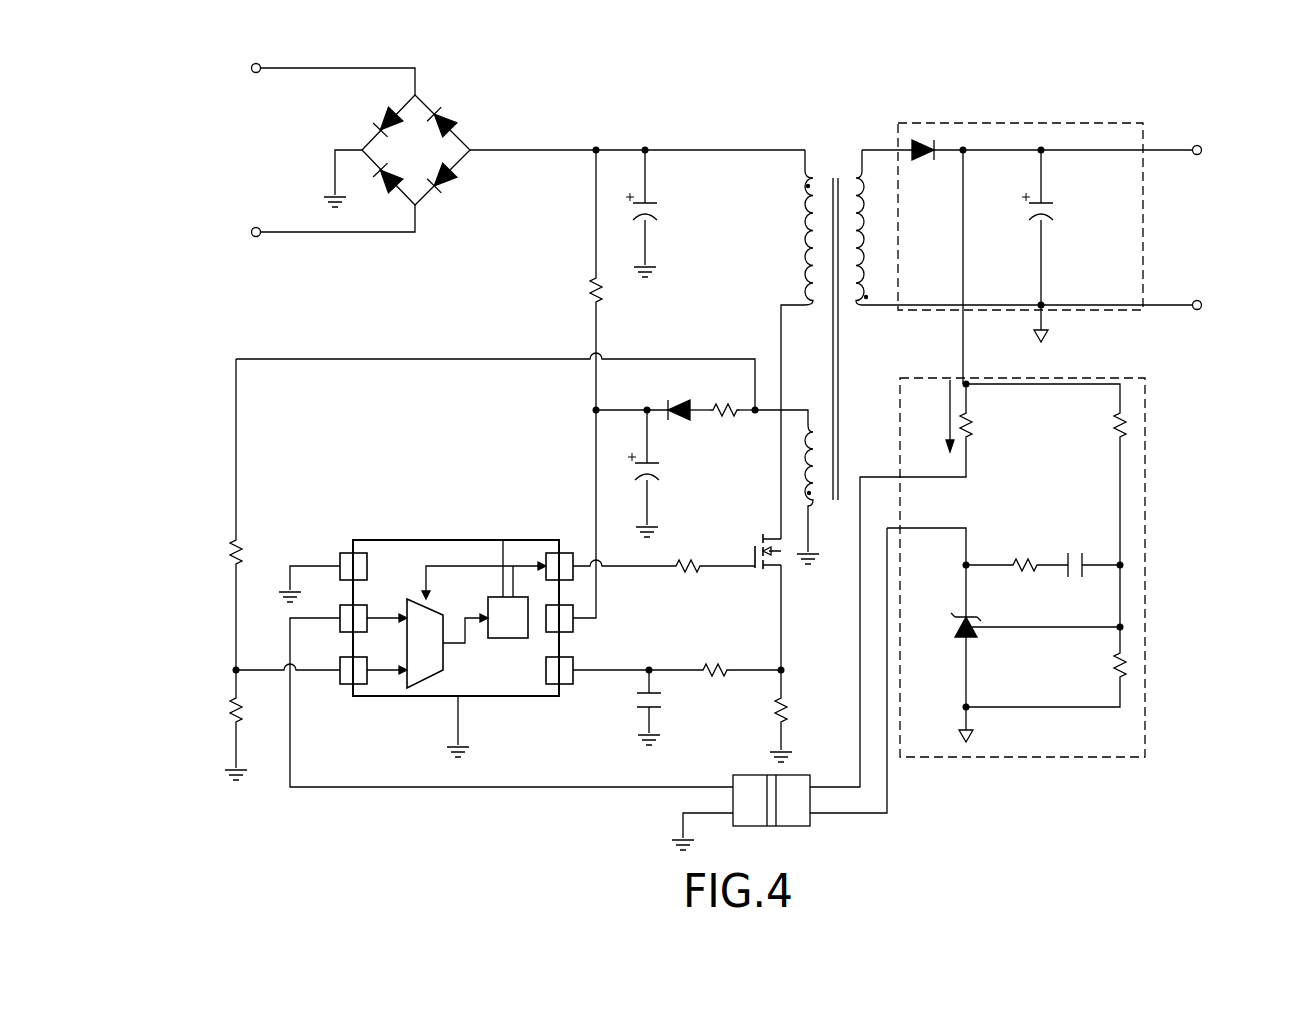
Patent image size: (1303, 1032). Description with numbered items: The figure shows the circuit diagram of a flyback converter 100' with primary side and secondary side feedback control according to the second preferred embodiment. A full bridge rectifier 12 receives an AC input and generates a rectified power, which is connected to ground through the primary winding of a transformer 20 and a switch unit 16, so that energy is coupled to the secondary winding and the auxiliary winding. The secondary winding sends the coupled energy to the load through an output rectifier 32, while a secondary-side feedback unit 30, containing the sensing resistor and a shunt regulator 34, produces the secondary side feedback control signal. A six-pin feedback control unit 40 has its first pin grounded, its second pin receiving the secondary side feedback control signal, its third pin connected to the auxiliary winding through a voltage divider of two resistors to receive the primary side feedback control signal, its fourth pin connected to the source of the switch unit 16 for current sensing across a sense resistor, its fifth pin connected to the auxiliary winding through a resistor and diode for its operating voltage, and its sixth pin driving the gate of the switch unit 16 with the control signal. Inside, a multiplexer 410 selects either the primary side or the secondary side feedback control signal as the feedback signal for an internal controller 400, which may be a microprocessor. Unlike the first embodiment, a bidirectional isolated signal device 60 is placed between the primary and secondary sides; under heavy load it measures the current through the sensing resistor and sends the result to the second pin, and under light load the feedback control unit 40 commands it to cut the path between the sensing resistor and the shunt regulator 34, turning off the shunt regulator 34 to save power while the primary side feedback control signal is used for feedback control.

The flyback converter 100' is at (747, 441).
The full bridge rectifier 12 is at (438, 103).
The transformer 20 is at (832, 153).
The output rectifier 32 is at (1020, 127).
The secondary-side feedback unit 30 is at (1040, 582).
The shunt regulator 34 is at (965, 617).
The feedback control unit 40 is at (456, 608).
The internal controller 400 is at (518, 637).
The multiplexer 410 is at (434, 666).
The switch unit 16 is at (755, 540).
The bidirectional isolated signal device 60 is at (753, 780).